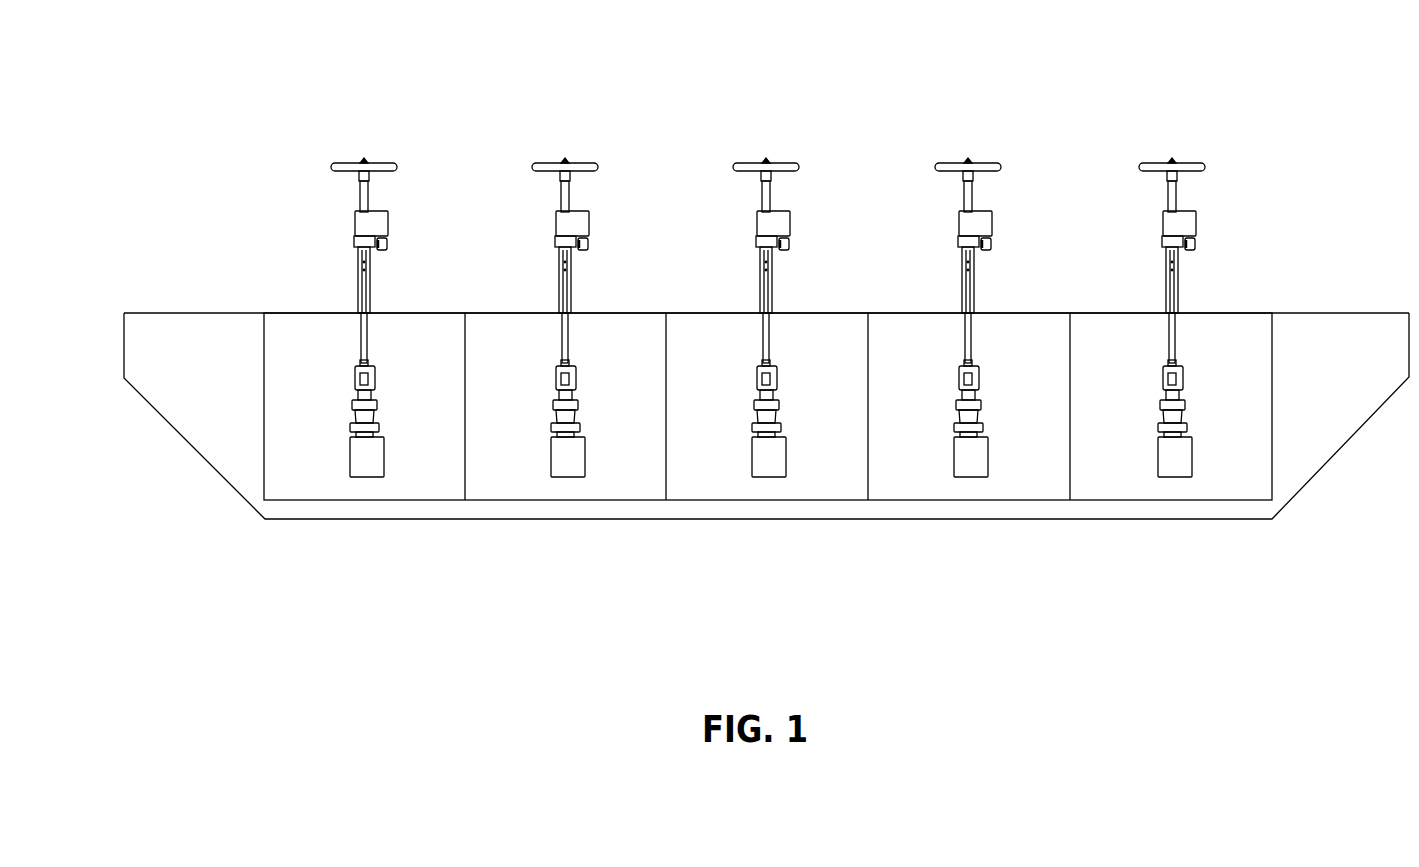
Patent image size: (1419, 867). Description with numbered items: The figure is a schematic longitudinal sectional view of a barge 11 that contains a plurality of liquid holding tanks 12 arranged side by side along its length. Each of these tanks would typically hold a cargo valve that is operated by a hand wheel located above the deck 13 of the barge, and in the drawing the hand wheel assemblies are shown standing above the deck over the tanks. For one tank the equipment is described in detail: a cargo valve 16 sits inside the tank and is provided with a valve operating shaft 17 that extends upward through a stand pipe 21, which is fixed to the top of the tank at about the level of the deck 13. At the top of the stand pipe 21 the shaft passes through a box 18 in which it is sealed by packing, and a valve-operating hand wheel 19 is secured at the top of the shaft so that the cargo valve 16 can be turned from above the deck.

The barge 11 is at (766, 370).
The liquid holding tanks 12 is at (419, 478).
The deck 13 is at (828, 313).
The cargo valve 16 is at (368, 465).
The valve operating shaft 17 is at (362, 342).
The valve actuator 18 is at (380, 222).
The valve-operating hand wheel 19 is at (357, 162).
The stand pipe 21 is at (373, 260).